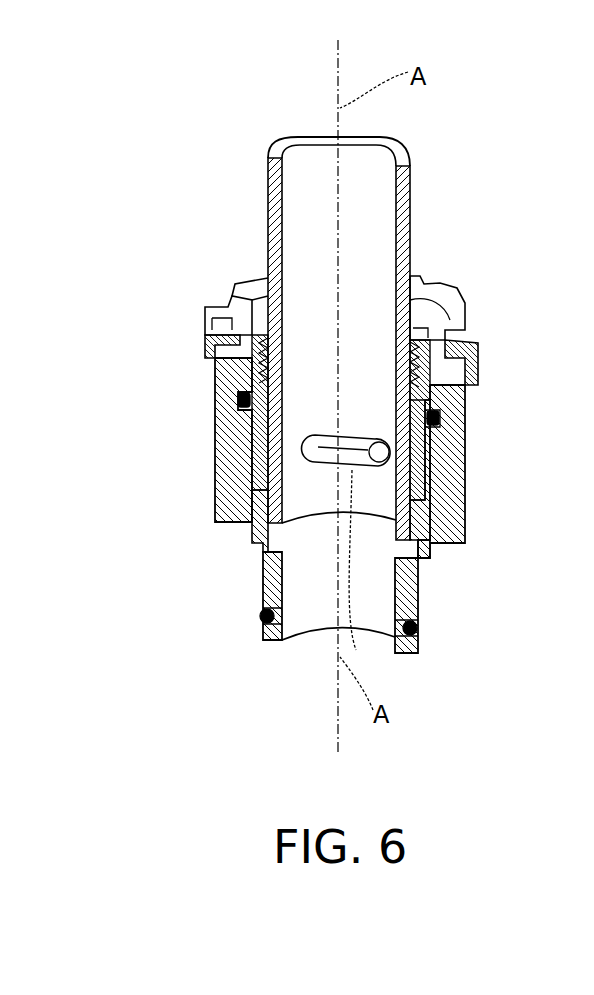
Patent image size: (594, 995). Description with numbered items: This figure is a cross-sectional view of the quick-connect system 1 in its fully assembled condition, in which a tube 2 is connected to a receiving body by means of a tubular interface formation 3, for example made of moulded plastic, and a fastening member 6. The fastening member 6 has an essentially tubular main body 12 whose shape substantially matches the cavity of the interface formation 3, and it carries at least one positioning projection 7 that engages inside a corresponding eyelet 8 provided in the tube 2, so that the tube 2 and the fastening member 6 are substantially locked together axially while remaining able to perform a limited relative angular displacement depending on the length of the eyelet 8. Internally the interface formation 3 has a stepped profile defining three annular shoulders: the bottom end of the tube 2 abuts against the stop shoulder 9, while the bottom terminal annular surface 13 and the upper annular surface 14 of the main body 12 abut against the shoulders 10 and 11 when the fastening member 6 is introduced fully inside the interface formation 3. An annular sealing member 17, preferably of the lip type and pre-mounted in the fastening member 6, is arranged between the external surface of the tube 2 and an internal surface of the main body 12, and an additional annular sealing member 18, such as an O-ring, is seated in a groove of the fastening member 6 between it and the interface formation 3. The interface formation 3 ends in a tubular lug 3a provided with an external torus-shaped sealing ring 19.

The quick-connect system 1 is at (200, 268).
The tube 2 is at (412, 213).
The tubular interface formation 3 is at (470, 434).
The tubular lug 3a is at (420, 592).
The fastening member 6 is at (197, 321).
The positioning projection 7 is at (376, 470).
The eyelet 8 is at (333, 458).
The stop shoulder 9 is at (265, 575).
The annular shoulder 10 is at (248, 486).
The annular shoulder 11 is at (240, 398).
The main body 12 is at (455, 483).
The bottom terminal annular surface 13 is at (250, 528).
The annular surface 14 is at (222, 440).
The annular sealing member 17 is at (470, 343).
The additional annular sealing member 18 is at (440, 410).
The torus-shaped sealing ring 19 is at (420, 625).